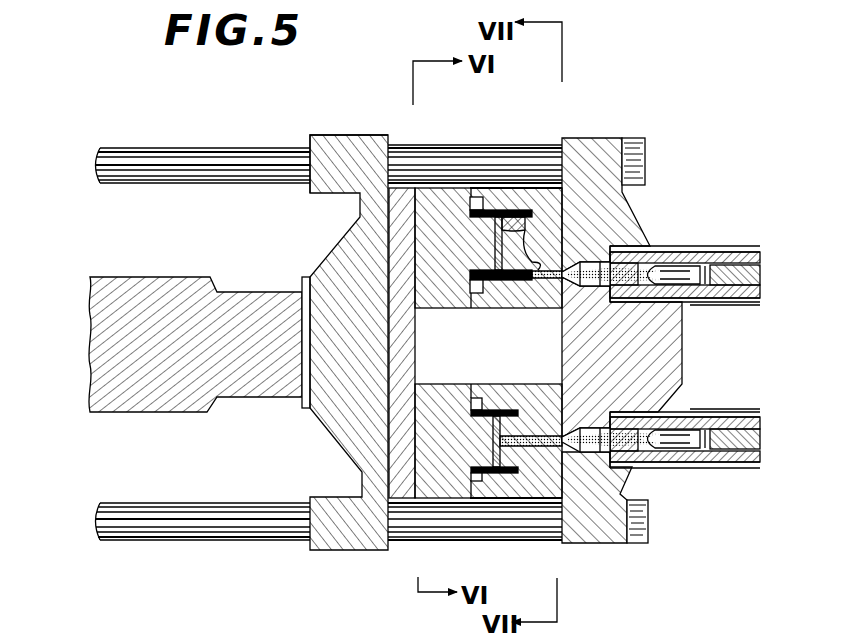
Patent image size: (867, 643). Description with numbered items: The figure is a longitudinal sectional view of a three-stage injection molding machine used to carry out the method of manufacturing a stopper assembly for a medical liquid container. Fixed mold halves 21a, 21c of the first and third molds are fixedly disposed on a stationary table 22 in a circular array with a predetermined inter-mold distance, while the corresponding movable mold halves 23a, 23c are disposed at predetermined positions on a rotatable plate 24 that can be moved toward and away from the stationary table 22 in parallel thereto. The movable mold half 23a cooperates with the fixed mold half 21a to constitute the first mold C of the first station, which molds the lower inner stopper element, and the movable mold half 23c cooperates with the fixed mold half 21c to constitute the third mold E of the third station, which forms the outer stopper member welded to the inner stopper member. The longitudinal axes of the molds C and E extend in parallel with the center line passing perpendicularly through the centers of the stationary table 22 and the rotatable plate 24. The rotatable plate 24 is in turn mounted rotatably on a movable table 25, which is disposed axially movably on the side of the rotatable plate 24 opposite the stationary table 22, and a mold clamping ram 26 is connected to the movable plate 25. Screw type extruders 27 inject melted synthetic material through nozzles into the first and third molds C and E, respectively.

The fixed mold half of the first mold 21a is at (554, 477).
The fixed mold half of the third mold 21c is at (550, 150).
The stationary table 22 is at (665, 350).
The movable mold half of the first mold 23a is at (435, 490).
The movable mold half of the third mold 23c is at (432, 213).
The rotatable plate 24 is at (388, 478).
The movable table 25 is at (332, 152).
The mold clamping ram 26 is at (179, 300).
The screw type extruders 27 is at (742, 247).
The third mold E is at (513, 179).
The first mold C is at (497, 508).